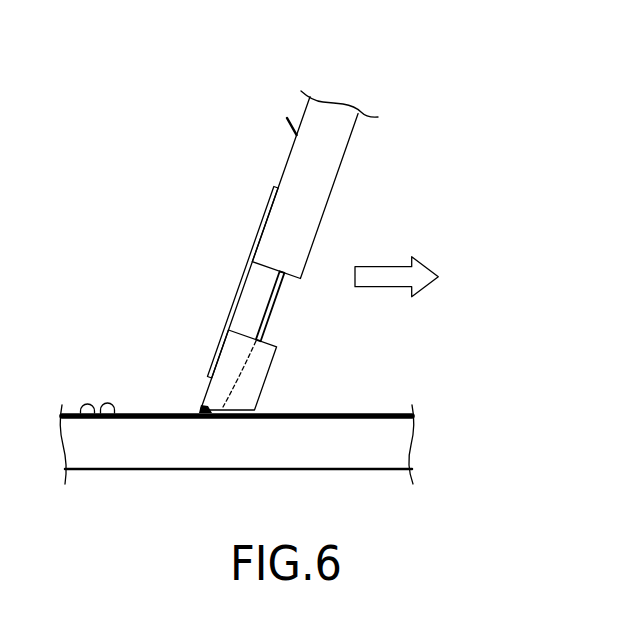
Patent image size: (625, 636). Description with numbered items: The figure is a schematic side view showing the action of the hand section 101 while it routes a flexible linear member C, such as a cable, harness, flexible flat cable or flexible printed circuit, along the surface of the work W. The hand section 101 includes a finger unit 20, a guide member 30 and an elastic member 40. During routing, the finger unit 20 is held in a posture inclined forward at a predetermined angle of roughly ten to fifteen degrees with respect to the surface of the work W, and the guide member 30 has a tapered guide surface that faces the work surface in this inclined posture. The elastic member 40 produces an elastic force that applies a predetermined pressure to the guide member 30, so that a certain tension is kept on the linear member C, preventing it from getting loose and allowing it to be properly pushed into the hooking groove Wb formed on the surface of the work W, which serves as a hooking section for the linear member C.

The hand section 101 is at (136, 92).
The finger unit 20 is at (340, 165).
The elastic member 40 is at (262, 205).
The linear member C is at (275, 303).
The guide member 30 is at (267, 377).
The work W is at (387, 413).
The hooking groove Wb is at (98, 403).